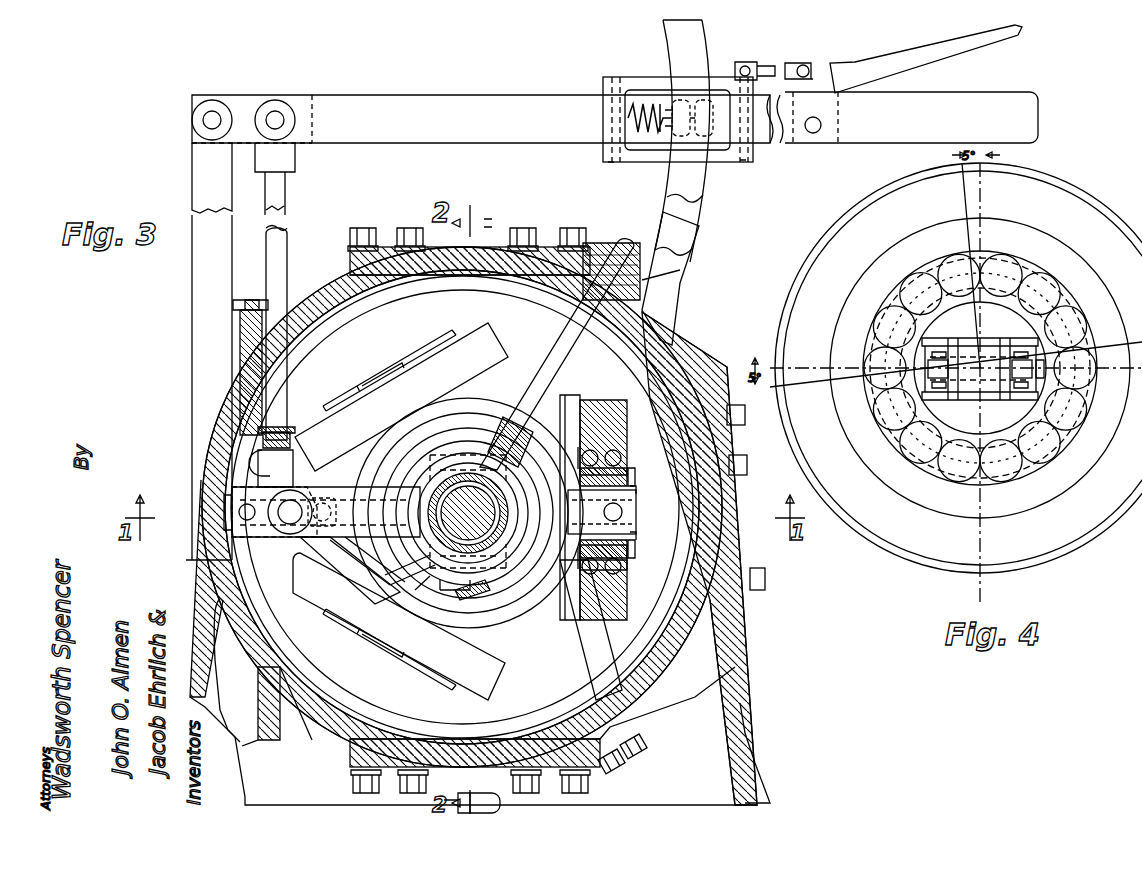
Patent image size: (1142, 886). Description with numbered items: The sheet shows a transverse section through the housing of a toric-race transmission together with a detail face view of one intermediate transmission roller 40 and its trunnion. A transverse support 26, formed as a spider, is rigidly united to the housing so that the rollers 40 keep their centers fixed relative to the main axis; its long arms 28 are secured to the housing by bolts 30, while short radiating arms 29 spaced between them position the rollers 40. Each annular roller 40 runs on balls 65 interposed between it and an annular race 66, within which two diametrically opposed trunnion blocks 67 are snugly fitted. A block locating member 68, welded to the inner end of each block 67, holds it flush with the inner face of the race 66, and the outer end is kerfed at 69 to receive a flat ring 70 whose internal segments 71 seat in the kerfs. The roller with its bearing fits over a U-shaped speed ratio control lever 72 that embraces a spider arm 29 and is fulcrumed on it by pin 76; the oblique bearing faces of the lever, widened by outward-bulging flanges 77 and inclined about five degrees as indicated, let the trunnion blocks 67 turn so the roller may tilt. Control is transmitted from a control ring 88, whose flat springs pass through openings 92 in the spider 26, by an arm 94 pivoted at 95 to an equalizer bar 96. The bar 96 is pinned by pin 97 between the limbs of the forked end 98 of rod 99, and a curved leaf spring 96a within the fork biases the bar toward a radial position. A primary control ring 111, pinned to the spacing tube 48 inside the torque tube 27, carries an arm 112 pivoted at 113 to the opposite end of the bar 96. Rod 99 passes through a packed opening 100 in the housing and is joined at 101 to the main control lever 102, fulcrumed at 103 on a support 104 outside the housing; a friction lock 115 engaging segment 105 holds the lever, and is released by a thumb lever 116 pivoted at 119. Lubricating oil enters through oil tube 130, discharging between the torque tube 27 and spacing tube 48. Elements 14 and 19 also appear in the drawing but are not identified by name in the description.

In FIG. 3, the base of housing 14 is at (770, 735).
In FIG. 3, the shaft 19 is at (416, 512).
In FIG. 3, the transverse support 26 is at (538, 420).
In FIG. 3, the torque tube 27 is at (516, 574).
In FIG. 3, the long arms 28 is at (566, 382).
In FIG. 3, the short radiating arms 29 is at (422, 608).
In FIG. 3, the bolts 30 is at (624, 752).
In FIG. 3, the intermediate transmission rollers 40 is at (448, 367).
In FIG. 4, the intermediate transmission rollers 40 is at (1118, 213).
In FIG. 3, the spacing tube 48 is at (410, 500).
In FIG. 3, the balls 65 is at (618, 450).
In FIG. 4, the balls 65 is at (1020, 277).
In FIG. 3, the annular race 66 is at (628, 470).
In FIG. 3, the trunnion blocks 67 is at (633, 483).
In FIG. 4, the trunnion blocks 67 is at (1038, 296).
In FIG. 3, the block locating member 68 is at (576, 453).
In FIG. 4, the block locating member 68 is at (958, 272).
In FIG. 3, the kerf 69 is at (635, 495).
In FIG. 4, the kerf 69 is at (1048, 450).
In FIG. 3, the flat ring 70 is at (627, 565).
In FIG. 4, the internal segments 71 is at (908, 303).
In FIG. 3, the speed ratio control lever 72 is at (638, 522).
In FIG. 4, the speed ratio control lever 72 is at (966, 386).
In FIG. 3, the pin 76 is at (622, 511).
In FIG. 4, the pin 76 is at (1043, 370).
In FIG. 4, the outward-bulging flanges 77 is at (1023, 346).
In FIG. 3, the control ring 88 is at (410, 580).
In FIG. 3, the openings 92 is at (507, 433).
In FIG. 3, the arm 94 is at (346, 502).
In FIG. 3, the pivot 95 is at (324, 498).
In FIG. 3, the equalizer bar 96 is at (258, 468).
In FIG. 3, the curved leaf spring 96a is at (247, 463).
In FIG. 3, the pin 97 is at (290, 524).
In FIG. 3, the forked end 98 is at (253, 520).
In FIG. 3, the rod 99 is at (289, 241).
In FIG. 3, the packed opening 100 is at (258, 304).
In FIG. 3, the joint 101 is at (276, 116).
In FIG. 3, the main control lever 102 is at (548, 104).
In FIG. 3, the fulcrum 103 is at (210, 120).
In FIG. 3, the support 104 is at (192, 303).
In FIG. 3, the segment 105 is at (694, 200).
In FIG. 3, the primary control ring 111 is at (392, 563).
In FIG. 3, the arm 112 is at (333, 546).
In FIG. 3, the pivot 113 is at (240, 517).
In FIG. 3, the friction lock 115 is at (718, 77).
In FIG. 3, the thumb lever 116 is at (965, 45).
In FIG. 3, the pivot 119 is at (821, 125).
In FIG. 3, the oil tube 130 is at (676, 280).